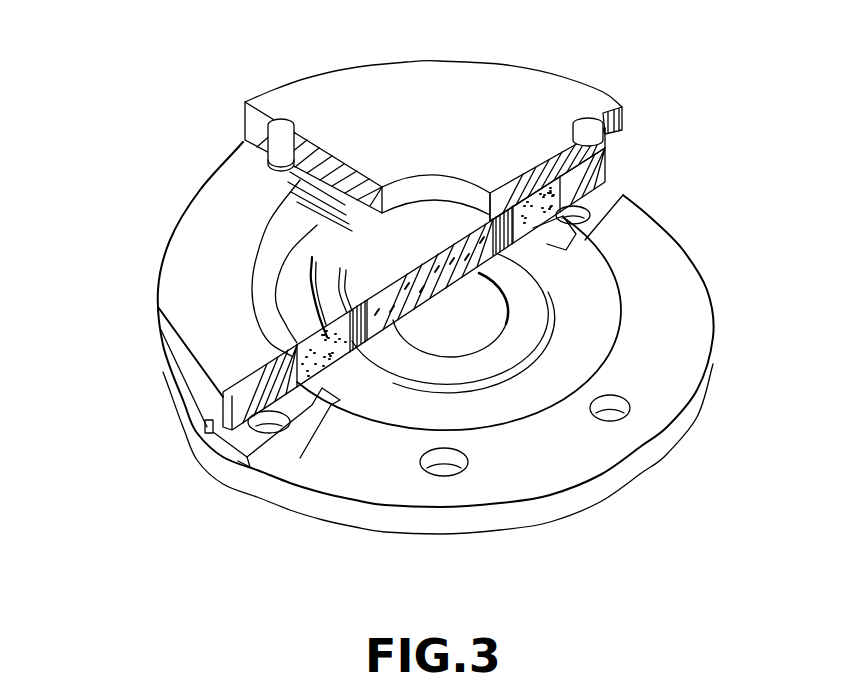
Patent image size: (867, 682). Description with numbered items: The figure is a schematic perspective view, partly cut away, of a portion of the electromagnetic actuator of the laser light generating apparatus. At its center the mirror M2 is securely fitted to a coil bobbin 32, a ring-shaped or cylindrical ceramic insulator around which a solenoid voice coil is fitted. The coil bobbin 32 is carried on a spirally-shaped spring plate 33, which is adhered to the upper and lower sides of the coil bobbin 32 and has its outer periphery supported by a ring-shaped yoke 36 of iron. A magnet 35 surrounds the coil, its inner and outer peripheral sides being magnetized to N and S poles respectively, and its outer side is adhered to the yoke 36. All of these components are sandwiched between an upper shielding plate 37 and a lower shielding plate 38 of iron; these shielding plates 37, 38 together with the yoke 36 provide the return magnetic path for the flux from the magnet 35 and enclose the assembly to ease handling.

The coil bobbin 32 is at (375, 345).
The spring plate 33 is at (362, 375).
The magnet 35 is at (590, 232).
The yoke 36 is at (217, 452).
The shielding plate 37 is at (370, 85).
The shielding plate 38 is at (555, 507).
The mirror M2 is at (365, 254).